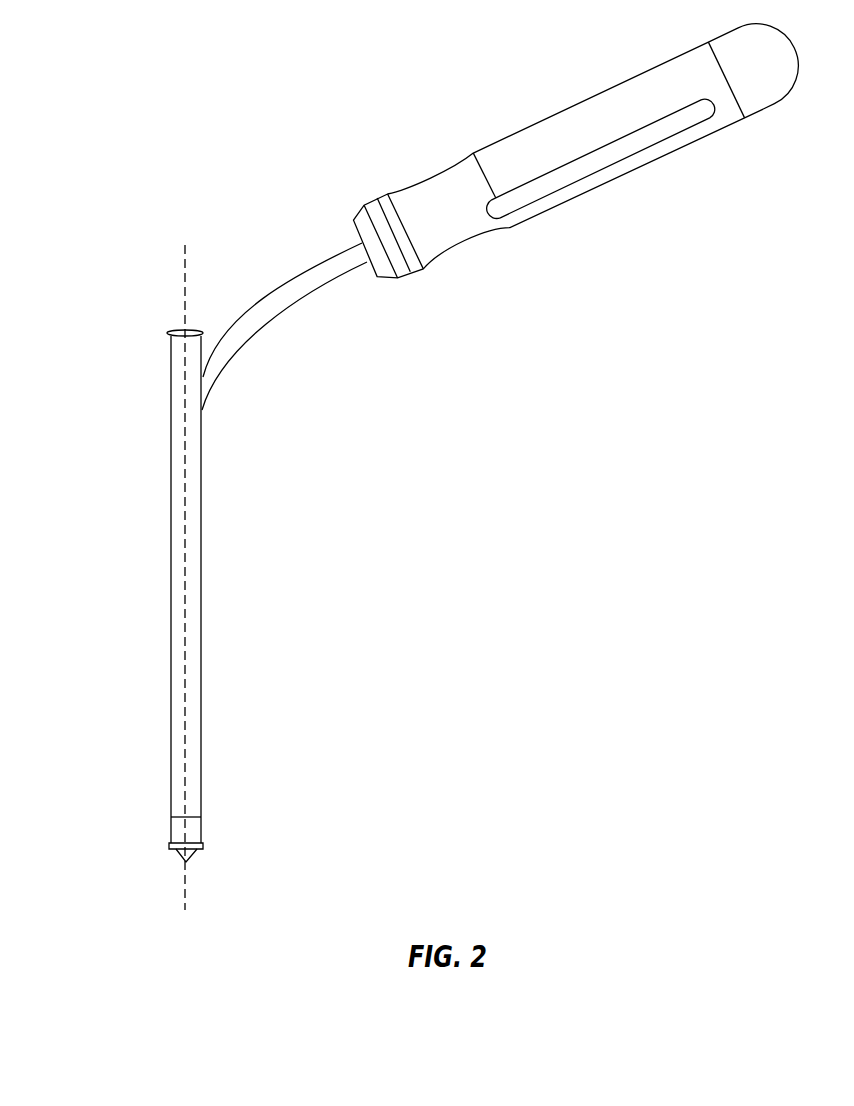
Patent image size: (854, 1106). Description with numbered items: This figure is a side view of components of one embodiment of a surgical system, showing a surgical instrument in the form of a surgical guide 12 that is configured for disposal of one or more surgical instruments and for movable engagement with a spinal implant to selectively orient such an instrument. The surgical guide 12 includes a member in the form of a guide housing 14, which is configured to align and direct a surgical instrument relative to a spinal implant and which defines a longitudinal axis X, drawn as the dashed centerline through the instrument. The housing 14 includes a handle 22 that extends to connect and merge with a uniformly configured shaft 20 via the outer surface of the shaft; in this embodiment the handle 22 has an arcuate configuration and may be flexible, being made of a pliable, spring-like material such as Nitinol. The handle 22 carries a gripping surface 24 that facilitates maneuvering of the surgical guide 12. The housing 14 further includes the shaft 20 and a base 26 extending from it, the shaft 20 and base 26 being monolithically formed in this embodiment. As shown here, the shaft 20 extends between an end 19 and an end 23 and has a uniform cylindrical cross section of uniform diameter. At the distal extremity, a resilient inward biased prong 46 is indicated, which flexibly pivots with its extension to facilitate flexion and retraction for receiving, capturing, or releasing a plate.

The surgical guide 12 is at (416, 451).
The guide housing 14 is at (172, 594).
The end 19 is at (170, 331).
The shaft 20 is at (170, 590).
The handle 22 is at (270, 297).
The end 23 is at (202, 820).
The gripping surface 24 is at (576, 103).
The base 26 is at (180, 832).
The resilient inward biased prong 46 is at (193, 857).
The longitudinal axis X is at (190, 903).